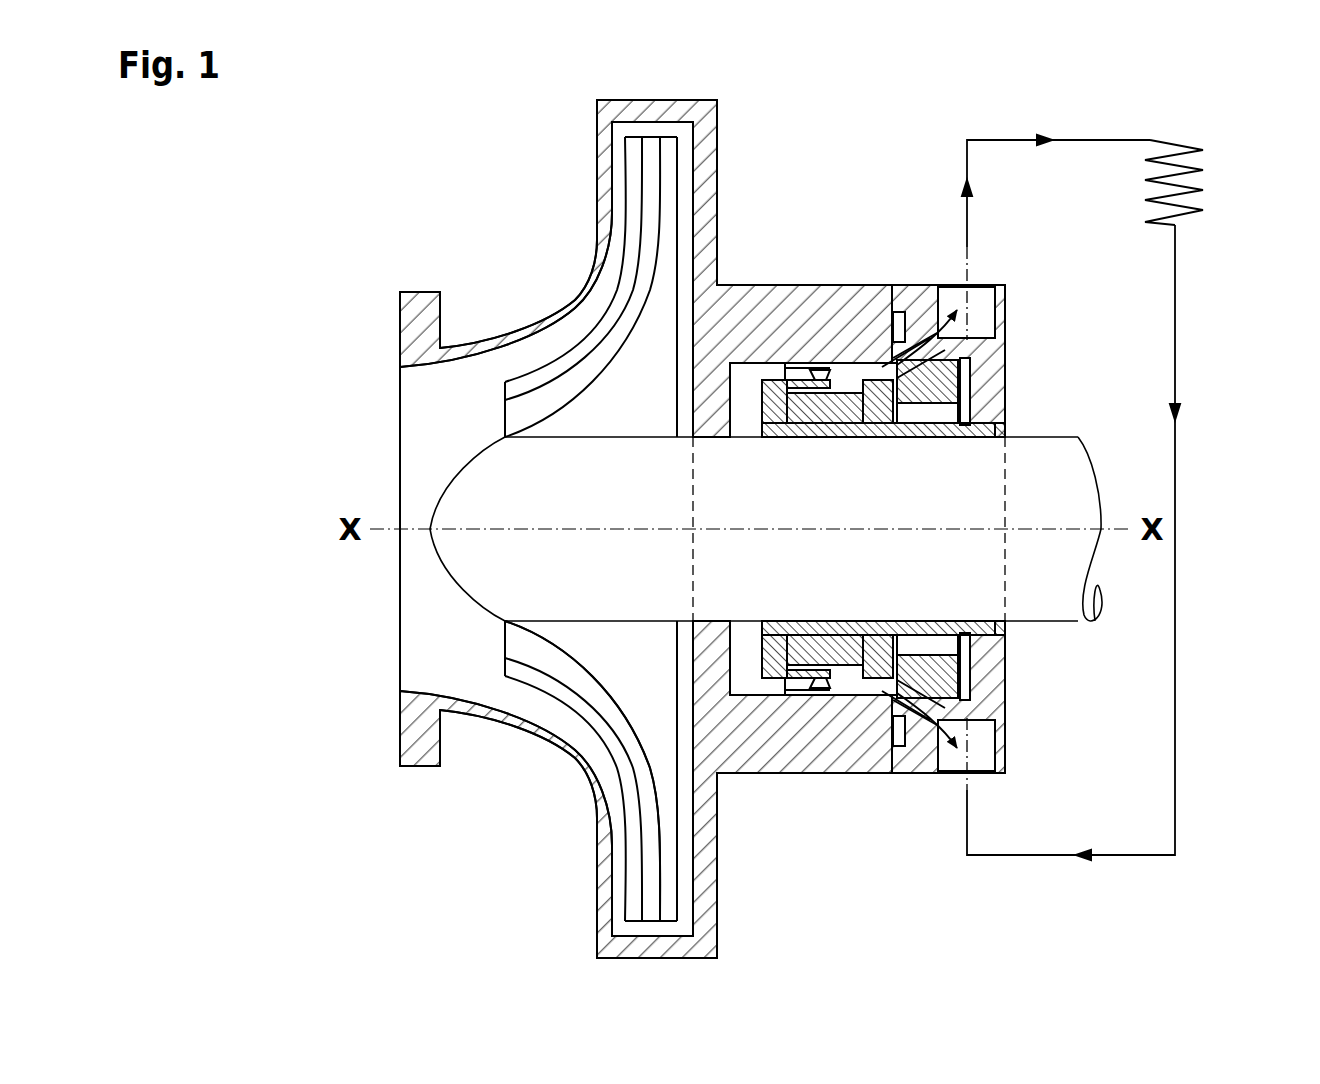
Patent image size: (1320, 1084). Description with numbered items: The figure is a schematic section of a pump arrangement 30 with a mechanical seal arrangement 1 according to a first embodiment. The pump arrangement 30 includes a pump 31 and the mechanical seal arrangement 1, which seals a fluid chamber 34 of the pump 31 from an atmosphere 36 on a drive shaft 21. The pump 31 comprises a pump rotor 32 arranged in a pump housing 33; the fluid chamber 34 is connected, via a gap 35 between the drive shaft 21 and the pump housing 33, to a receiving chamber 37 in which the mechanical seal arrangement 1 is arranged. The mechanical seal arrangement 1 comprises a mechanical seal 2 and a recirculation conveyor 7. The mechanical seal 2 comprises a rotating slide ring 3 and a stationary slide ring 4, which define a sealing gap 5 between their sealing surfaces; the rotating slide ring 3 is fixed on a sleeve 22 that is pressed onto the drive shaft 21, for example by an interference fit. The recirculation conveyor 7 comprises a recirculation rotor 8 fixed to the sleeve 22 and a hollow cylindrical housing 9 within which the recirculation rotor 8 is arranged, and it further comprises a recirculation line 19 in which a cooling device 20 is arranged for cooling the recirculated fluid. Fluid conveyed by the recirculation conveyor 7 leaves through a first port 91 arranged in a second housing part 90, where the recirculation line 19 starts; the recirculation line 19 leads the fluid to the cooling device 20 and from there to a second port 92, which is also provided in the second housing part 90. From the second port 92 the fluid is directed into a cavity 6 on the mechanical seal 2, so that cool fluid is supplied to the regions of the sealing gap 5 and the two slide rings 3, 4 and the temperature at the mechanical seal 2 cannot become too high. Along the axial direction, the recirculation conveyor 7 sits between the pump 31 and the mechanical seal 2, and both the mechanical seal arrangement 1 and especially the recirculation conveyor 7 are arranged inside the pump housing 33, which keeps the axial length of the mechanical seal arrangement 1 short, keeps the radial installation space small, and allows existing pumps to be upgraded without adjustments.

The mechanical seal arrangement 1 is at (878, 340).
The mechanical seal 2 is at (854, 374).
The rotating slide ring 3 is at (815, 700).
The stationary slide ring 4 is at (930, 718).
The sealing gap 5 is at (878, 690).
The cavity 6 is at (810, 662).
The recirculation conveyor 7 is at (786, 358).
The recirculation rotor 8 is at (800, 398).
The hollow cylindrical housing 9 is at (805, 365).
The recirculation line 19 is at (1126, 464).
The cooling device 20 is at (1185, 205).
The drive shaft 21 is at (1085, 455).
The sleeve 22 is at (845, 432).
The pump arrangement 30 is at (611, 312).
The pump 31 is at (515, 328).
The pump rotor 32 is at (610, 300).
The pump housing 33 is at (735, 300).
The fluid chamber 34 is at (685, 682).
The gap 35 is at (738, 690).
The atmosphere 36 is at (1032, 421).
The receiving chamber 37 is at (745, 660).
The second housing part 90 is at (993, 355).
The first port 91 is at (985, 300).
The second port 92 is at (985, 748).